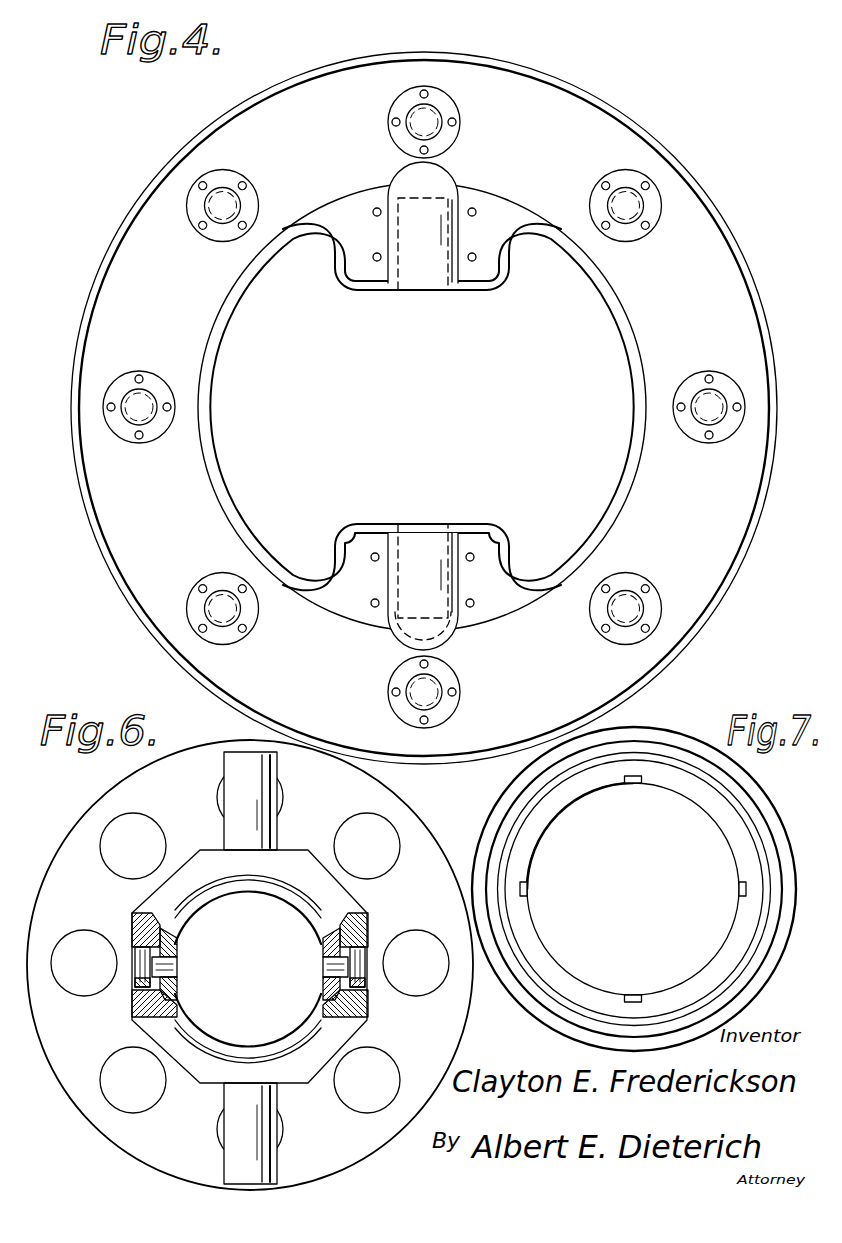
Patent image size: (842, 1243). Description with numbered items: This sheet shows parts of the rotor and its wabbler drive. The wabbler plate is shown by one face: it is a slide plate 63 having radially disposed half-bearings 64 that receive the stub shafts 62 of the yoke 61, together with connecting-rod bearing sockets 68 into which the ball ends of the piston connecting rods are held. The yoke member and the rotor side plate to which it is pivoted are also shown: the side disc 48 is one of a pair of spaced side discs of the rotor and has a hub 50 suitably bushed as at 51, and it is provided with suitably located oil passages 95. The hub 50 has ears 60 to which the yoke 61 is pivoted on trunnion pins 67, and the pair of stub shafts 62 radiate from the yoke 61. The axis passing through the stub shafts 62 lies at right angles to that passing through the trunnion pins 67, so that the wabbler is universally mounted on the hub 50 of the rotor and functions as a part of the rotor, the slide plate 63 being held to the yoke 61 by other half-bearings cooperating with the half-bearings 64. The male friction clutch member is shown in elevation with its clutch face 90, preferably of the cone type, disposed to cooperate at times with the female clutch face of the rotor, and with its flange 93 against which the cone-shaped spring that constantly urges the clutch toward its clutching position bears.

In FIG. 6, the side disc 48 is at (415, 837).
In FIG. 6, the hub 50 is at (197, 1028).
In FIG. 6, the bushing 51 is at (252, 1040).
In FIG. 6, the ear 60 is at (322, 945).
In FIG. 6, the yoke 61 is at (200, 855).
In FIG. 6, the stub shaft 62 is at (265, 767).
In FIG. 4, the slide plate 63 is at (608, 150).
In FIG. 4, the half-bearing 64 is at (438, 183).
In FIG. 6, the trunnion pin 67 is at (167, 963).
In FIG. 4, the connecting-rod bearing socket 68 is at (439, 112).
In FIG. 7, the clutch face 90 is at (787, 812).
In FIG. 7, the flange 93 is at (568, 793).
In FIG. 6, the oil passage 95 is at (389, 866).